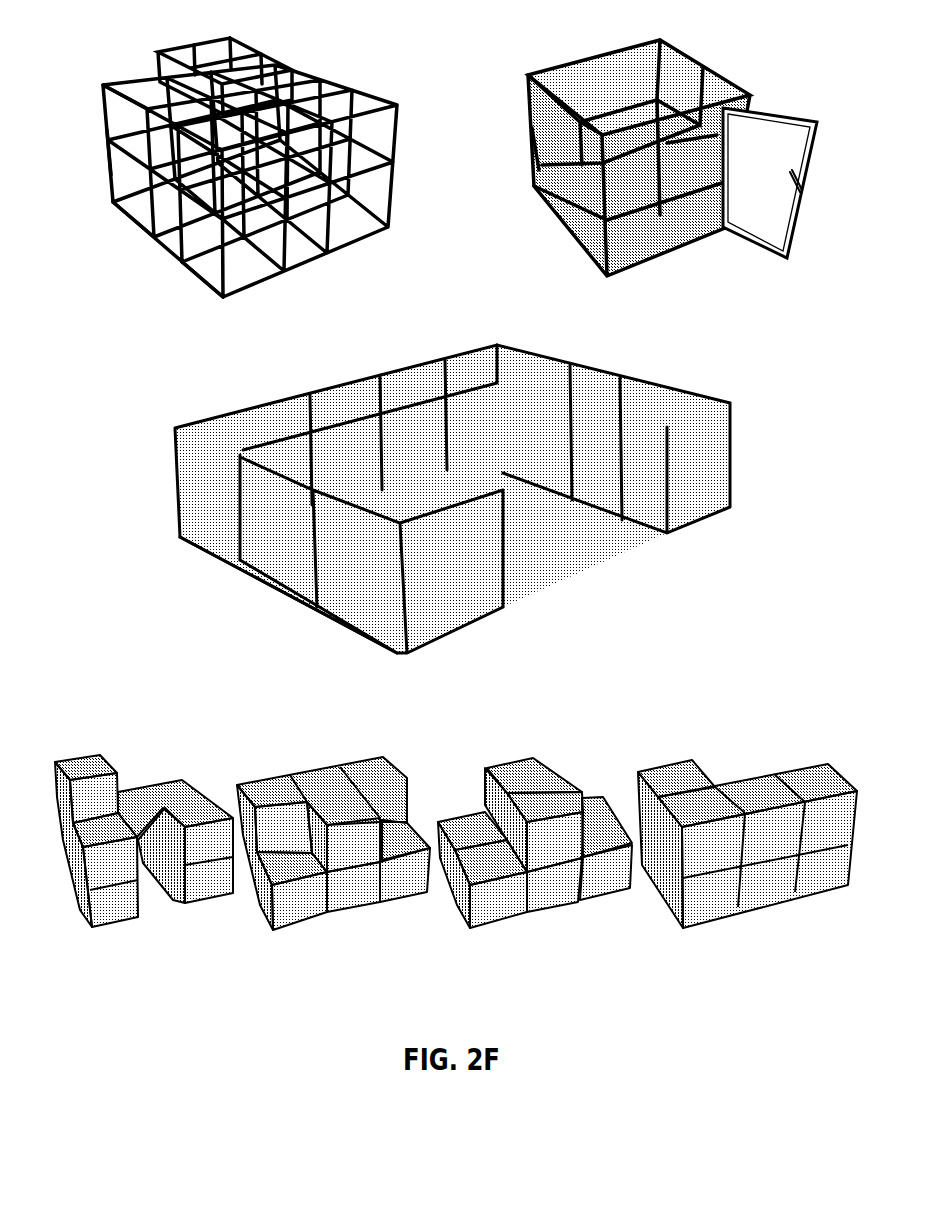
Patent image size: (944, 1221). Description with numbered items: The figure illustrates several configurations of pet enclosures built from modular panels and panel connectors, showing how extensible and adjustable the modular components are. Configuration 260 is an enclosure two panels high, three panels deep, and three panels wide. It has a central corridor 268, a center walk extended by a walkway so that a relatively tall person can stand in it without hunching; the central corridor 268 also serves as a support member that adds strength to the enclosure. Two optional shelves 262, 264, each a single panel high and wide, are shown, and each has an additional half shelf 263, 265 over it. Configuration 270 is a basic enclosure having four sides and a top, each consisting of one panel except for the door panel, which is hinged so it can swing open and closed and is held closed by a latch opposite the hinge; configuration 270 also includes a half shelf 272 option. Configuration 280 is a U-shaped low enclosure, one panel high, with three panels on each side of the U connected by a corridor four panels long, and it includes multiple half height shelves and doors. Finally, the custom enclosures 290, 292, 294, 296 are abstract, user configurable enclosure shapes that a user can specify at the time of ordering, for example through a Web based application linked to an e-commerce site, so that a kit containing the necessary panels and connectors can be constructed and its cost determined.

The configuration 260 is at (374, 63).
The shelf 262 is at (173, 233).
The half shelf 263 is at (123, 208).
The shelf 264 is at (107, 167).
The half shelf 265 is at (103, 108).
The central corridor 268 is at (237, 45).
The configuration 270 is at (790, 61).
The half shelf 272 is at (533, 155).
The configuration 280 is at (716, 365).
The custom enclosure 290 is at (105, 755).
The custom enclosure 292 is at (310, 768).
The custom enclosure 294 is at (545, 767).
The custom enclosure 296 is at (752, 775).